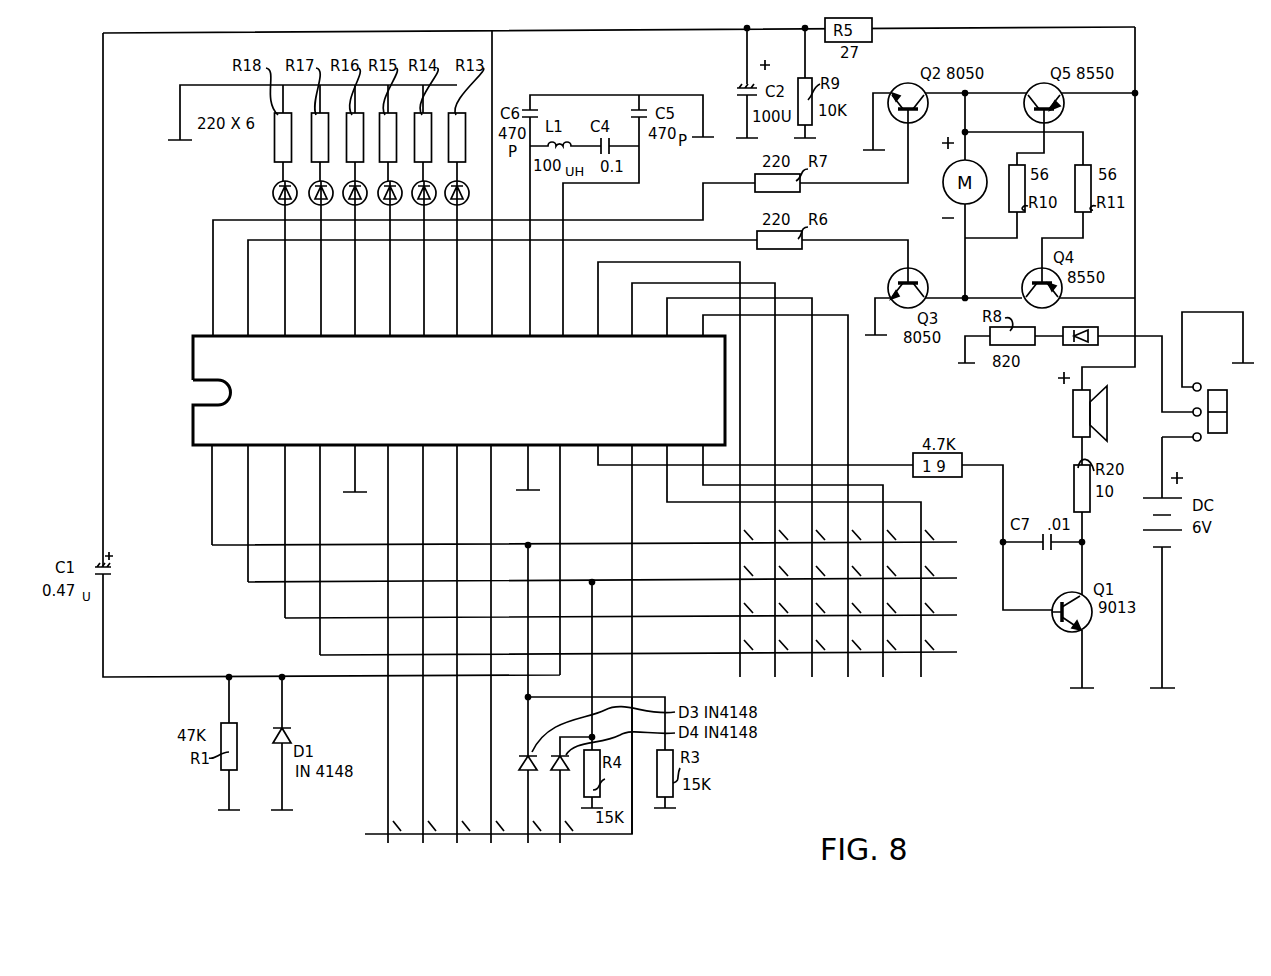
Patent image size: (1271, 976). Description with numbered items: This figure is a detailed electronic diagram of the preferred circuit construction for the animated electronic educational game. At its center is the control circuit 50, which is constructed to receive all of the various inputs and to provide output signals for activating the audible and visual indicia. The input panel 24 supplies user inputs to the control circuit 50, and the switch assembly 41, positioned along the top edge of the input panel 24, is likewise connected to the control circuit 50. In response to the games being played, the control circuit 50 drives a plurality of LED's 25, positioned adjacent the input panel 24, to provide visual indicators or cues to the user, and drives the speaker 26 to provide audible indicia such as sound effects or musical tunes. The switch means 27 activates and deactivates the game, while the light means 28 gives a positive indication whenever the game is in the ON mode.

The input panel 24 is at (868, 664).
The LED's 25 is at (311, 204).
The speaker 26 is at (1074, 421).
The switch means 27 is at (1225, 425).
The light means 28 is at (1098, 347).
The switch assembly 41 is at (567, 826).
The control circuit 50 is at (190, 372).